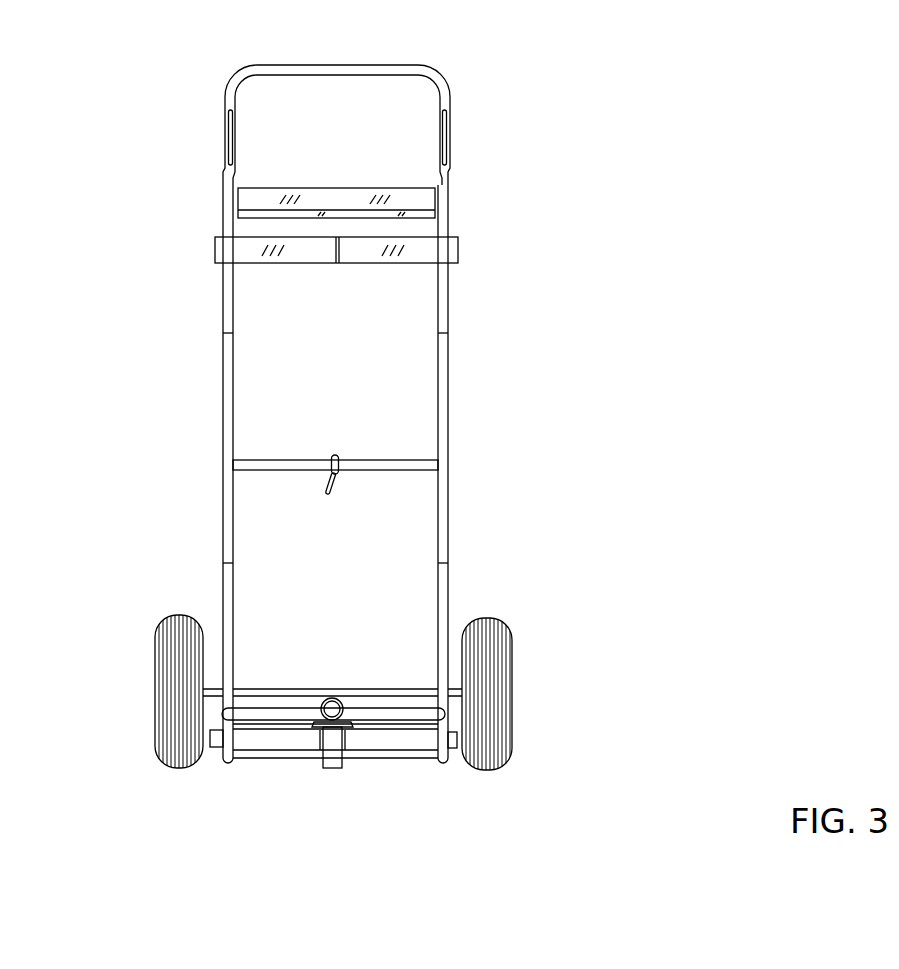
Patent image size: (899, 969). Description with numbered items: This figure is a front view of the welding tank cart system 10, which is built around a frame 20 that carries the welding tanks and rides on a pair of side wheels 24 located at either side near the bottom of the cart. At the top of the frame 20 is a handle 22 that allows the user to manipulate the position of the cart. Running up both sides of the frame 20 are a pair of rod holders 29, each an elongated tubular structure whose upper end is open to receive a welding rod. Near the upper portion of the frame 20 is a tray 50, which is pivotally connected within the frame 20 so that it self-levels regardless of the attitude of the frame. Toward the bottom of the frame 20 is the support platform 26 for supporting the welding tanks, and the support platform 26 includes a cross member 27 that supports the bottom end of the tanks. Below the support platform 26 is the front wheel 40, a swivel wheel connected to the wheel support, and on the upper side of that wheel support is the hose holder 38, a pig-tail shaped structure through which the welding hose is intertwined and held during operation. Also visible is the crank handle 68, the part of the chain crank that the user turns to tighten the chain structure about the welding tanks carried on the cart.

The welding tank cart system 10 is at (688, 225).
The frame 20 is at (455, 288).
The handle 22 is at (345, 75).
The side wheels 24 is at (513, 694).
The support platform 26 is at (256, 712).
The cross member 27 is at (385, 758).
The rod holders 29 is at (227, 428).
The hose holder 38 is at (341, 698).
The front wheel 40 is at (322, 772).
The tray 50 is at (334, 186).
The crank handle 68 is at (338, 487).